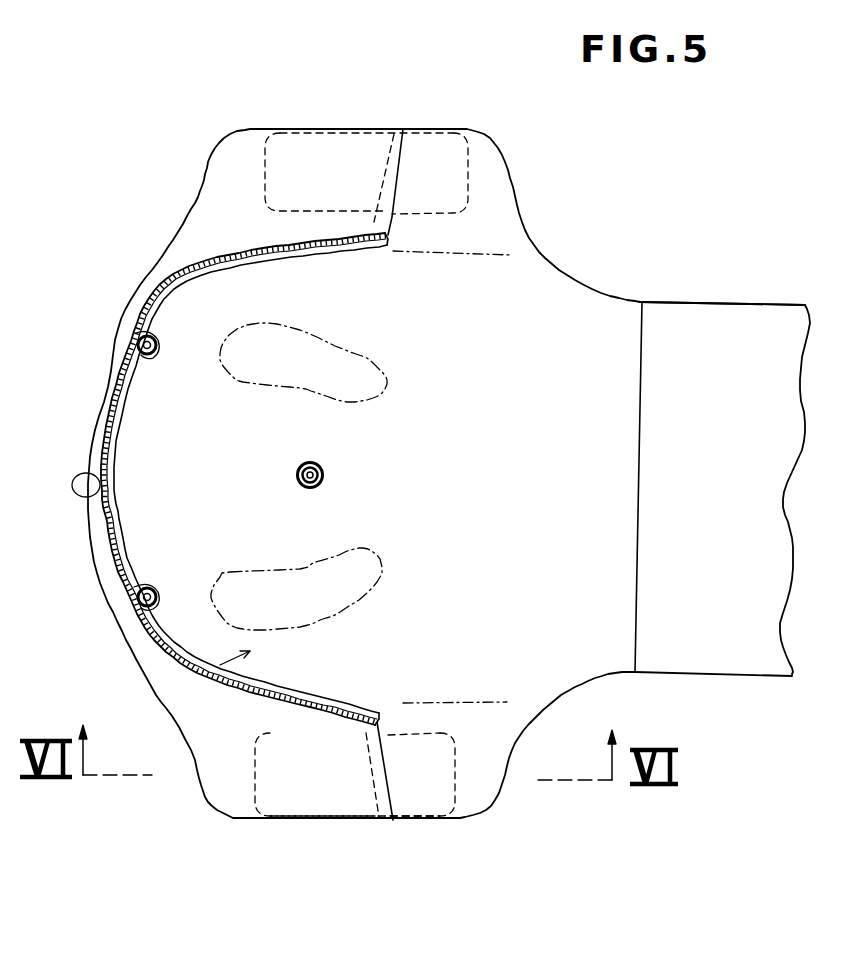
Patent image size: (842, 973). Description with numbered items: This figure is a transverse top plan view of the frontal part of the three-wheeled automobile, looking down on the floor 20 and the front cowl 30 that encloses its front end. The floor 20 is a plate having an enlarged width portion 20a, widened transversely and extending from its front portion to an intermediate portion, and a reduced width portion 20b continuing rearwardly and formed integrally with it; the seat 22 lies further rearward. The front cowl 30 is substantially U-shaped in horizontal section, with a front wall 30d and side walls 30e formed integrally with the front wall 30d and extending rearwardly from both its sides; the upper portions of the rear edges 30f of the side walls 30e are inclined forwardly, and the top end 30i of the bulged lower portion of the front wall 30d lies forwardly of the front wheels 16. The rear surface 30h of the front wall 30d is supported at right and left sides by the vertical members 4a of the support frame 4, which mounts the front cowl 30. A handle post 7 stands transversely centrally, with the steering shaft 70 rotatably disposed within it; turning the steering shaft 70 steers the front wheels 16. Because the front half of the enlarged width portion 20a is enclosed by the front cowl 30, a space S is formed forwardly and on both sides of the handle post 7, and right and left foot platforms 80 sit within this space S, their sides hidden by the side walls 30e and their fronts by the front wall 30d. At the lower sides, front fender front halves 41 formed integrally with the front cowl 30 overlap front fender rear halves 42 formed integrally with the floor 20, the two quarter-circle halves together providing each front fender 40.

The floor 20 is at (185, 678).
The enlarged width portion 20a is at (390, 333).
The reduced width portion 20b is at (607, 437).
The seat 22 is at (711, 318).
The front fender 40 is at (429, 125).
The front fender front half 41 is at (313, 148).
The front fender rear half 42 is at (437, 163).
The front wheel 16 is at (368, 128).
The front cowl 30 is at (110, 393).
The front wall 30d is at (98, 491).
The side wall 30e is at (245, 256).
The rear edge 30f is at (387, 238).
The rear surface 30h is at (118, 418).
The top end 30i is at (90, 532).
The support frame 4 is at (163, 607).
The vertical member 4a is at (160, 337).
The handle post 7 is at (324, 478).
The steering shaft 70 is at (322, 468).
The foot platform 80 is at (367, 382).
The space S is at (170, 452).